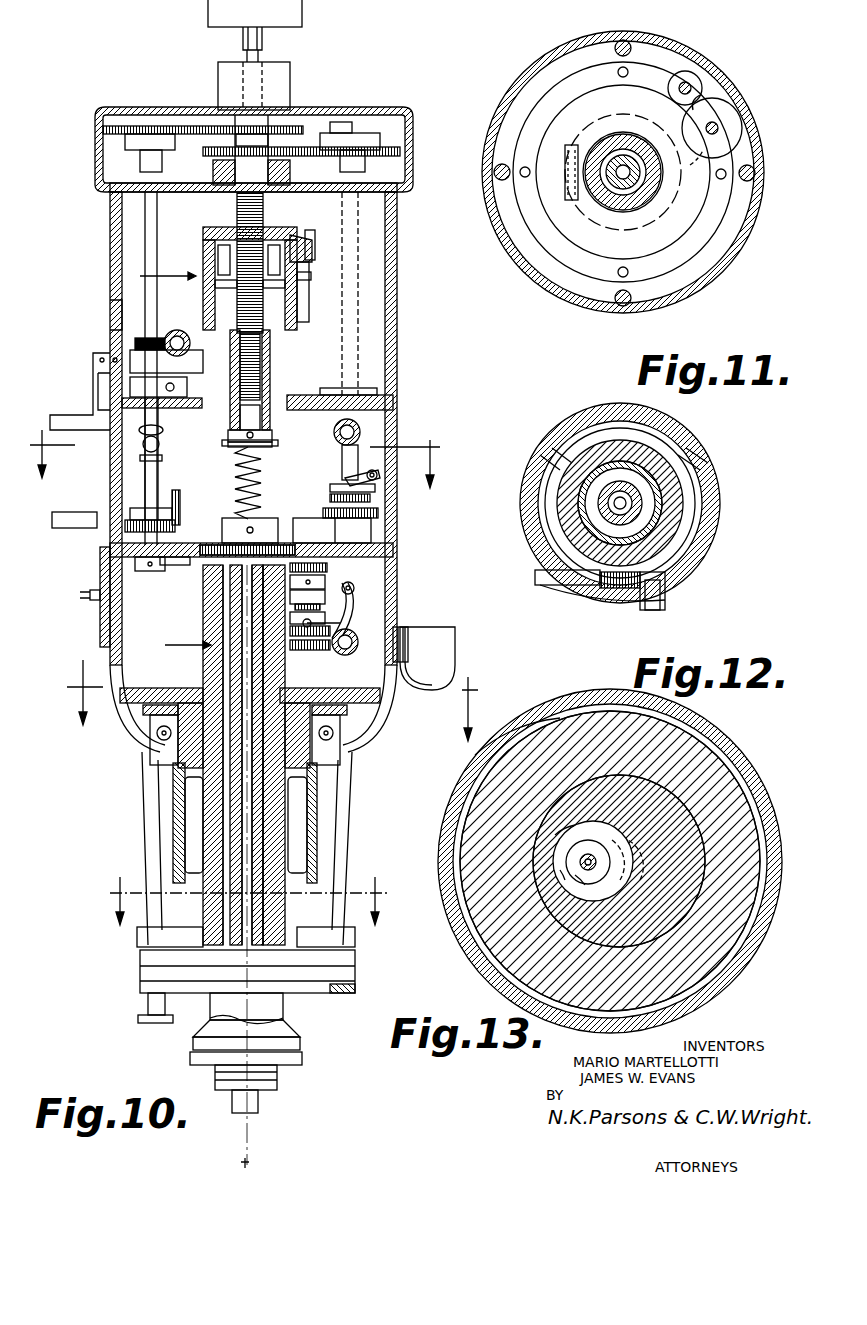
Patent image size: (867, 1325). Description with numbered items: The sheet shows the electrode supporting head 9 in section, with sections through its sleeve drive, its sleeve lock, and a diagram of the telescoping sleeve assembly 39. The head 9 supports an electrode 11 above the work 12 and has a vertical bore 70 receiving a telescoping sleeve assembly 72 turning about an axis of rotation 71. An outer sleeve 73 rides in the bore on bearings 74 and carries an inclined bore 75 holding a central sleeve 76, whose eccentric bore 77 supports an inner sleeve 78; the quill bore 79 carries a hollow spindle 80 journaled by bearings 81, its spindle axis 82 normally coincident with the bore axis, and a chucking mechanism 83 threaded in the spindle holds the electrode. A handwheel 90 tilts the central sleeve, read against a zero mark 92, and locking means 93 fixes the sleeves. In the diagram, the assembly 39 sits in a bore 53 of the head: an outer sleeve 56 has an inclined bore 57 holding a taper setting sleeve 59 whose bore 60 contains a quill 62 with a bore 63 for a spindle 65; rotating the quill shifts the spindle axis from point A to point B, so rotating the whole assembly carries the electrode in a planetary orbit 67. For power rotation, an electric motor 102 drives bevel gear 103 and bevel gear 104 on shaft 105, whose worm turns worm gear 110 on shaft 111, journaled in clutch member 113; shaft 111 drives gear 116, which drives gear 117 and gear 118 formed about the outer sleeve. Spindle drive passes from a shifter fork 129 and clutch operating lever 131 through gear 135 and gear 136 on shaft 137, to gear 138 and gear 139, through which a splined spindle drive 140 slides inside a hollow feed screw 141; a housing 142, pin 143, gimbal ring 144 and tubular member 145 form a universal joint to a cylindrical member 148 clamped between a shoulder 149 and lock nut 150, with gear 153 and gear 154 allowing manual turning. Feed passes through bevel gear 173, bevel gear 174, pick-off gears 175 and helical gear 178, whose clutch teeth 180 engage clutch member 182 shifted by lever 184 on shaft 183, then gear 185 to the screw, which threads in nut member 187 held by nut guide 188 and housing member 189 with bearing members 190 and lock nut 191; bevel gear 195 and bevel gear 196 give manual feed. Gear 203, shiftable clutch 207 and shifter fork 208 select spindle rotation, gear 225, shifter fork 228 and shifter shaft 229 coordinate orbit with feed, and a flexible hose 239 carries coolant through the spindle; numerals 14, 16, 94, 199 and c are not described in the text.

In FIG. 10, the electrode supporting head 9 is at (397, 310).
In FIG. 11, the electrode supporting head 9 is at (748, 254).
In FIG. 13, the electrode supporting head 9 is at (710, 745).
In FIG. 10, the electrode 11 is at (288, 1105).
In FIG. 10, the work 12 is at (242, 889).
In FIG. 10, the section line 14 is at (233, 442).
In FIG. 10, the section line 16 is at (161, 460).
In FIG. 13, the telescoping sleeve assembly 39 is at (520, 740).
In FIG. 13, the bore 53 is at (742, 765).
In FIG. 13, the outer sleeve 56 is at (740, 807).
In FIG. 13, the inclined bore 57 is at (605, 833).
In FIG. 13, the taper setting sleeve 59 is at (693, 850).
In FIG. 13, the bore 60 is at (625, 798).
In FIG. 13, the quill 62 is at (562, 835).
In FIG. 13, the bore 63 is at (577, 872).
In FIG. 13, the spindle 65 is at (583, 870).
In FIG. 13, the planetary orbit 67 is at (643, 893).
In FIG. 10, the vertical bore 70 is at (167, 740).
In FIG. 10, the axis of rotation 71 is at (240, 968).
In FIG. 10, the telescoping sleeve assembly 72 is at (203, 683).
In FIG. 10, the outer sleeve 73 is at (177, 760).
In FIG. 11, the outer sleeve 73 is at (573, 212).
In FIG. 12, the outer sleeve 73 is at (690, 503).
In FIG. 10, the bearings 74 is at (173, 743).
In FIG. 10, the bore 75 is at (197, 763).
In FIG. 10, the central sleeve 76 is at (283, 797).
In FIG. 11, the central sleeve 76 is at (600, 209).
In FIG. 12, the central sleeve 76 is at (665, 515).
In FIG. 10, the bore 77 is at (297, 820).
In FIG. 10, the inner sleeve 78 is at (265, 825).
In FIG. 11, the inner sleeve 78 is at (617, 210).
In FIG. 12, the inner sleeve 78 is at (642, 523).
In FIG. 10, the bore 79 is at (263, 863).
In FIG. 10, the spindle 80 is at (250, 862).
In FIG. 11, the spindle 80 is at (637, 183).
In FIG. 12, the spindle 80 is at (622, 527).
In FIG. 10, the bearings 81 is at (230, 577).
In FIG. 10, the spindle axis 82 is at (248, 960).
In FIG. 10, the chucking mechanism 83 is at (302, 1060).
In FIG. 10, the handwheel 90 is at (350, 995).
In FIG. 10, the zero mark 92 is at (355, 960).
In FIG. 10, the locking means 93 is at (147, 783).
In FIG. 12, the locking means 93 is at (587, 580).
In FIG. 10, the stud 94 is at (150, 1020).
In FIG. 10, the electric motor 102 is at (455, 630).
In FIG. 10, the bevel gear 103 is at (380, 683).
In FIG. 10, the bevel gear 104 is at (355, 628).
In FIG. 10, the shaft 105 is at (358, 642).
In FIG. 10, the worm gear 110 is at (347, 720).
In FIG. 11, the shaft 111 is at (687, 84).
In FIG. 10, the clutch member 113 is at (328, 592).
In FIG. 11, the gear 116 is at (702, 84).
In FIG. 10, the gear 117 is at (357, 703).
In FIG. 11, the gear 117 is at (742, 120).
In FIG. 10, the gear 118 is at (150, 690).
In FIG. 11, the gear 118 is at (693, 170).
In FIG. 10, the shifter fork 129 is at (205, 340).
In FIG. 10, the clutch operating lever 131 is at (93, 356).
In FIG. 10, the gear 135 is at (176, 330).
In FIG. 10, the gear 136 is at (112, 320).
In FIG. 10, the shaft 137 is at (147, 205).
In FIG. 10, the gear 138 is at (155, 130).
In FIG. 10, the gear 139 is at (288, 125).
In FIG. 10, the splined spindle drive 140 is at (262, 38).
In FIG. 10, the feed screw 141 is at (263, 210).
In FIG. 10, the housing 142 is at (270, 390).
In FIG. 10, the pin 143 is at (230, 442).
In FIG. 10, the gimbal ring 144 is at (275, 362).
In FIG. 10, the tubular member 145 is at (262, 436).
In FIG. 10, the cylindrical member 148 is at (228, 556).
In FIG. 10, the shoulder 149 is at (210, 603).
In FIG. 10, the lock nut 150 is at (230, 530).
In FIG. 10, the gear 153 is at (138, 453).
In FIG. 10, the gear 154 is at (140, 440).
In FIG. 10, the bevel gear 173 is at (150, 548).
In FIG. 10, the bevel gear 174 is at (178, 500).
In FIG. 10, the pick-off gears 175 is at (313, 510).
In FIG. 10, the helical gear 178 is at (378, 512).
In FIG. 10, the clutch teeth 180 is at (372, 522).
In FIG. 10, the clutch member 182 is at (382, 482).
In FIG. 10, the shaft 183 is at (397, 410).
In FIG. 10, the lever 184 is at (343, 470).
In FIG. 10, the gear 185 is at (400, 152).
In FIG. 10, the nut member 187 is at (215, 228).
In FIG. 10, the nut guide 188 is at (312, 248).
In FIG. 10, the housing member 189 is at (300, 283).
In FIG. 10, the bearing members 190 is at (218, 290).
In FIG. 10, the lock nut 191 is at (272, 288).
In FIG. 10, the bevel gear 195 is at (337, 435).
In FIG. 10, the bevel gear 196 is at (365, 400).
In FIG. 10, the plate 199 is at (100, 550).
In FIG. 10, the gear 203 is at (140, 558).
In FIG. 10, the shiftable clutch 207 is at (130, 527).
In FIG. 10, the shifter fork 208 is at (130, 512).
In FIG. 10, the gear 225 is at (330, 580).
In FIG. 10, the shifter fork 228 is at (330, 613).
In FIG. 10, the shifter shaft 229 is at (355, 585).
In FIG. 10, the flexible hose 239 is at (232, 473).
In FIG. 13, the point A is at (612, 860).
In FIG. 13, the point B is at (612, 848).
In FIG. 10, the axis c is at (243, 1162).